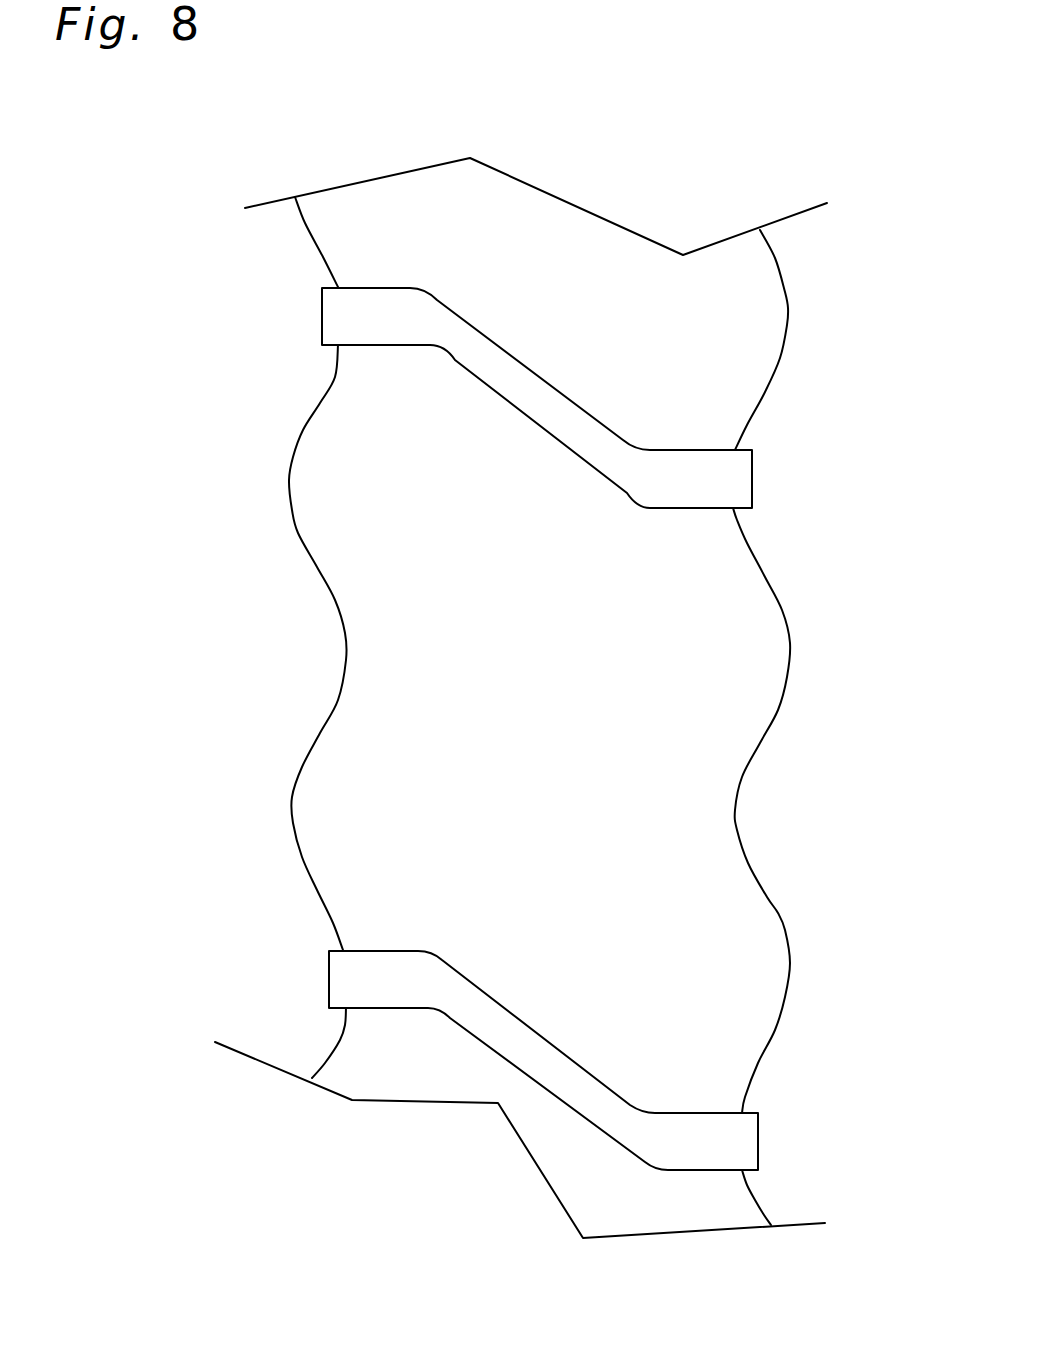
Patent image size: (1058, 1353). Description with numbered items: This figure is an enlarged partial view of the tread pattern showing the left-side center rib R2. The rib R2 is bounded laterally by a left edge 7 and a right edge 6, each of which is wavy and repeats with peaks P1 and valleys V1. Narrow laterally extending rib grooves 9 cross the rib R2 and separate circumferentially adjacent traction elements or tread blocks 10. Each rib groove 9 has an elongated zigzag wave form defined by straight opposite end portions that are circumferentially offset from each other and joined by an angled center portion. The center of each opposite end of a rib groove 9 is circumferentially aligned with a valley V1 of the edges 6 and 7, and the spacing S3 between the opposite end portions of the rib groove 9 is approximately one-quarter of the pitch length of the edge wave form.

The traction element 10 is at (550, 265).
The rib groove 9 is at (720, 486).
The edge of rib 7 is at (320, 575).
The edge of rib 6 is at (779, 912).
The peak P1 is at (289, 480).
The valley V1 is at (345, 656).
The spacing S3 is at (625, 508).
The center rib R2 is at (538, 146).